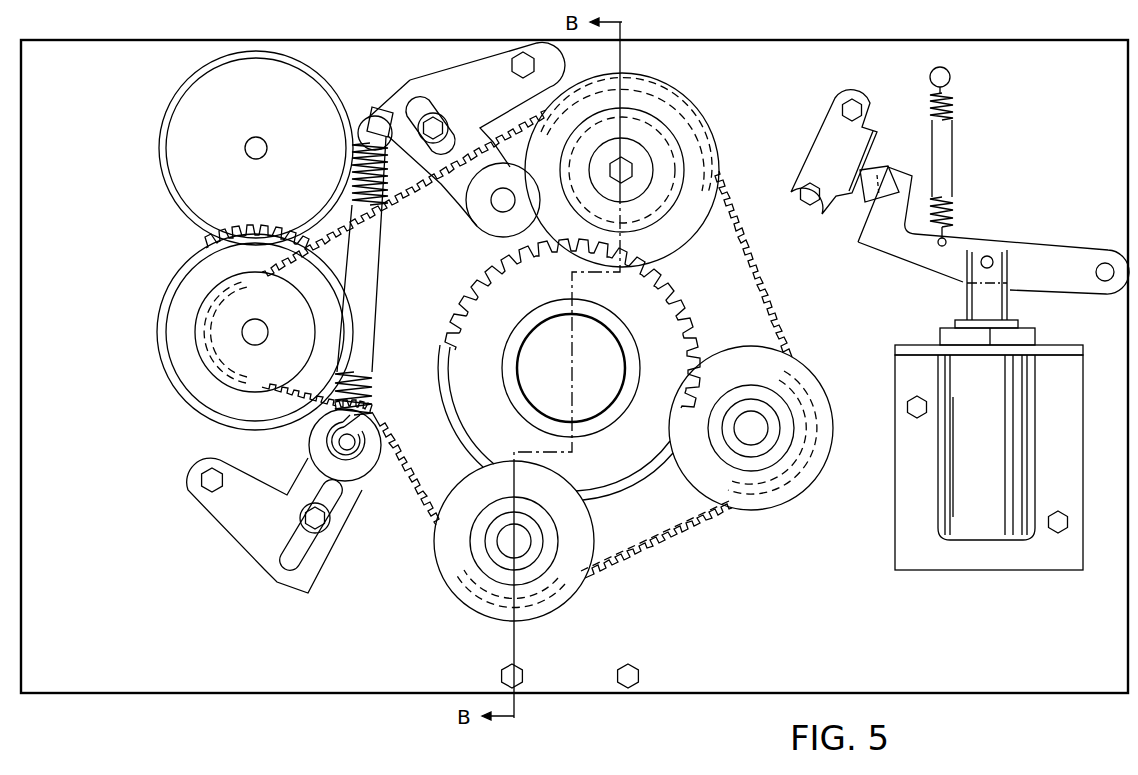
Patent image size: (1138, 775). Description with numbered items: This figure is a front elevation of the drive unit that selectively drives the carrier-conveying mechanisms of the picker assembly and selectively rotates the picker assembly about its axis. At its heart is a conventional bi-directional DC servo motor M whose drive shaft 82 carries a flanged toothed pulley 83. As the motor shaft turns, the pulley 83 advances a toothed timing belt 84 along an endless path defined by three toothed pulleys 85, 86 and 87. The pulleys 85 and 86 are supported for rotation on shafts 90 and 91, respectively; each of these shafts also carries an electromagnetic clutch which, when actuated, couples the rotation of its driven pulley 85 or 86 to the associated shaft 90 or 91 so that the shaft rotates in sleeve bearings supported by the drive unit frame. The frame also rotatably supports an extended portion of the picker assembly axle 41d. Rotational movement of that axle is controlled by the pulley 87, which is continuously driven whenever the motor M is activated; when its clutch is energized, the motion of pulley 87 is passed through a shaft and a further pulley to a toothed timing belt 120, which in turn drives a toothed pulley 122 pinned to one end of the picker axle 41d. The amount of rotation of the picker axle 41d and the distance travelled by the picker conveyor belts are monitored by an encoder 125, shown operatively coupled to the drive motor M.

The encoder 125 is at (200, 184).
The bi-directional DC servo motor M is at (218, 392).
The flanged toothed pulley 83 is at (203, 354).
The drive shaft 82 is at (264, 329).
The toothed timing belt 84 is at (410, 447).
The toothed pulley 87 is at (678, 123).
The toothed timing belt 120 is at (703, 258).
The toothed pulley 122 is at (517, 316).
The axle 41d is at (512, 352).
The toothed pulley 86 is at (808, 470).
The shaft 91 is at (753, 415).
The toothed pulley 85 is at (568, 597).
The shaft 90 is at (523, 542).